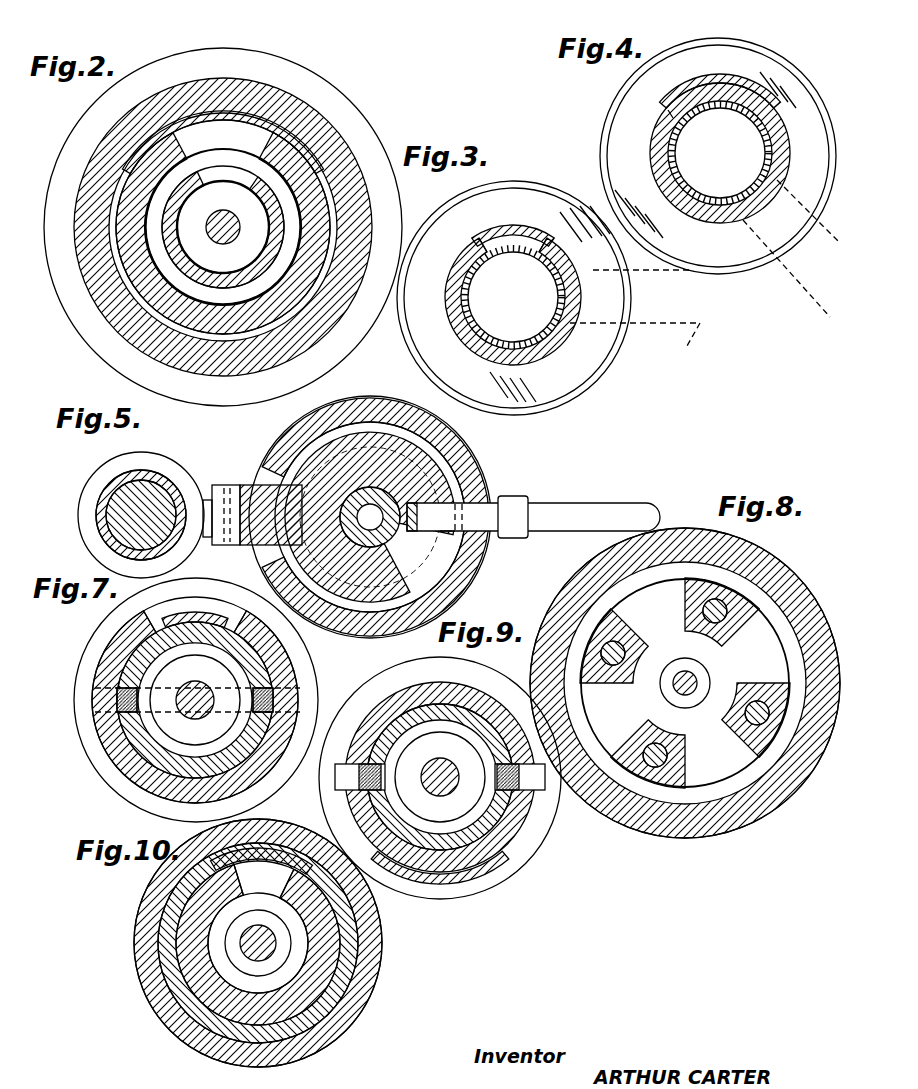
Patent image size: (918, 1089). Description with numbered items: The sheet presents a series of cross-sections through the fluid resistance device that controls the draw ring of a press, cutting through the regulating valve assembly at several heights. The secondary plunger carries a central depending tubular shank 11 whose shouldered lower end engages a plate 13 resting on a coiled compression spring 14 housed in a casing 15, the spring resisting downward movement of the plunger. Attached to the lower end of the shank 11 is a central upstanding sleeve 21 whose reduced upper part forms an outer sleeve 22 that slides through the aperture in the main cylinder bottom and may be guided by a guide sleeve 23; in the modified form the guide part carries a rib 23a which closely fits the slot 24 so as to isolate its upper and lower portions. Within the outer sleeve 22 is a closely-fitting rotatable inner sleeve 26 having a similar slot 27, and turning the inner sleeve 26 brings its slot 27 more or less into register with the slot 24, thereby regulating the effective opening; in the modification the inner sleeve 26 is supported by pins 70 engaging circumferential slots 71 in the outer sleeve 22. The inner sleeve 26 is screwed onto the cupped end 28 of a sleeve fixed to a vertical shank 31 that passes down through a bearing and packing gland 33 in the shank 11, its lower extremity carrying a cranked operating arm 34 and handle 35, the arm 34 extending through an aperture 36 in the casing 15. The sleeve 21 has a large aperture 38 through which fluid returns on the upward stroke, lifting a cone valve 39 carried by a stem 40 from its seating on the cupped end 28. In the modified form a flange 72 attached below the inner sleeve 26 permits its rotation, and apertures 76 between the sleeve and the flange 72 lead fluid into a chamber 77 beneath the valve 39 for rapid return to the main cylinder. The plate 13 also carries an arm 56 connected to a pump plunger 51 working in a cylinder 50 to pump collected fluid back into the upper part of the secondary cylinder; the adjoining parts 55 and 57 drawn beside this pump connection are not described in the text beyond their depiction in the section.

In FIG. 2, the tubular shank 11 is at (103, 143).
In FIG. 7, the tubular shank 11 is at (150, 815).
In FIG. 9, the tubular shank 11 is at (440, 778).
In FIG. 8, the tubular shank 11 is at (743, 553).
In FIG. 10, the tubular shank 11 is at (258, 943).
In FIG. 5, the plate 13 is at (247, 486).
In FIG. 5, the coiled compression spring 14 is at (482, 563).
In FIG. 5, the casing 15 is at (440, 432).
In FIG. 2, the upstanding sleeve 21 is at (302, 172).
In FIG. 3, the upstanding sleeve 21 is at (590, 368).
In FIG. 4, the upstanding sleeve 21 is at (753, 258).
In FIG. 3, the outer sleeve 22 is at (575, 303).
In FIG. 4, the outer sleeve 22 is at (753, 105).
In FIG. 7, the outer sleeve 22 is at (113, 753).
In FIG. 9, the outer sleeve 22 is at (477, 877).
In FIG. 10, the outer sleeve 22 is at (185, 1005).
In FIG. 10, the guide sleeve 23 is at (238, 892).
In FIG. 9, the rib 23a is at (355, 937).
In FIG. 3, the slot 24 is at (520, 238).
In FIG. 4, the slot 24 is at (693, 100).
In FIG. 7, the slot 24 is at (167, 612).
In FIG. 10, the slot 24 is at (292, 860).
In FIG. 3, the inner rotatable sleeve 26 is at (565, 273).
In FIG. 4, the inner rotatable sleeve 26 is at (665, 142).
In FIG. 7, the inner rotatable sleeve 26 is at (127, 698).
In FIG. 9, the inner rotatable sleeve 26 is at (453, 853).
In FIG. 10, the inner rotatable sleeve 26 is at (190, 973).
In FIG. 3, the slot 27 is at (522, 248).
In FIG. 4, the slot 27 is at (748, 117).
In FIG. 7, the slot 27 is at (170, 631).
In FIG. 9, the slot 27 is at (420, 885).
In FIG. 10, the slot 27 is at (262, 861).
In FIG. 2, the cupped end 28 is at (279, 225).
In FIG. 2, the vertical shank 31 is at (231, 174).
In FIG. 5, the vertical shank 31 is at (387, 509).
In FIG. 5, the packing gland 33 is at (364, 462).
In FIG. 3, the operating arm 34 is at (636, 317).
In FIG. 4, the operating arm 34 is at (830, 317).
In FIG. 5, the operating arm 34 is at (430, 539).
In FIG. 5, the handle 35 is at (598, 504).
In FIG. 5, the aperture 36 is at (437, 577).
In FIG. 2, the aperture 38 is at (170, 118).
In FIG. 7, the cone valve 39 is at (168, 730).
In FIG. 9, the cone valve 39 is at (418, 742).
In FIG. 10, the cone valve 39 is at (223, 920).
In FIG. 2, the stem 40 is at (220, 218).
In FIG. 7, the stem 40 is at (195, 719).
In FIG. 9, the stem 40 is at (443, 789).
In FIG. 10, the stem 40 is at (247, 942).
In FIG. 5, the cylinder 50 is at (100, 519).
In FIG. 5, the pump plunger 51 is at (127, 488).
In FIG. 5, the pin 55 is at (208, 538).
In FIG. 5, the arm 56 is at (218, 486).
In FIG. 5, the block 57 is at (265, 484).
In FIG. 7, the pins 70 is at (97, 720).
In FIG. 9, the pins 70 is at (352, 785).
In FIG. 9, the circumferential slots 71 is at (368, 715).
In FIG. 8, the flange 72 is at (733, 597).
In FIG. 8, the apertures 76 is at (657, 600).
In FIG. 8, the chamber 77 is at (700, 783).